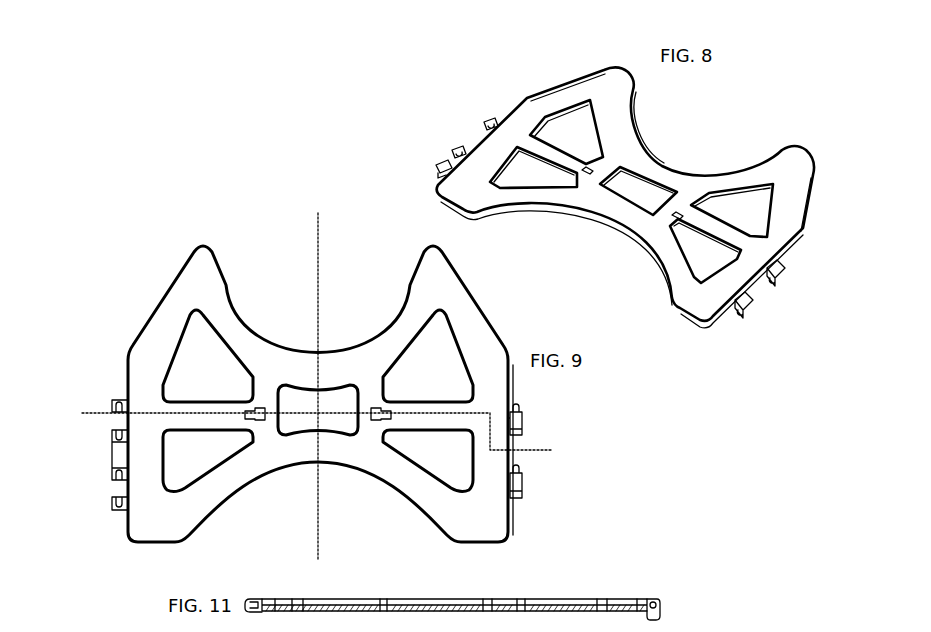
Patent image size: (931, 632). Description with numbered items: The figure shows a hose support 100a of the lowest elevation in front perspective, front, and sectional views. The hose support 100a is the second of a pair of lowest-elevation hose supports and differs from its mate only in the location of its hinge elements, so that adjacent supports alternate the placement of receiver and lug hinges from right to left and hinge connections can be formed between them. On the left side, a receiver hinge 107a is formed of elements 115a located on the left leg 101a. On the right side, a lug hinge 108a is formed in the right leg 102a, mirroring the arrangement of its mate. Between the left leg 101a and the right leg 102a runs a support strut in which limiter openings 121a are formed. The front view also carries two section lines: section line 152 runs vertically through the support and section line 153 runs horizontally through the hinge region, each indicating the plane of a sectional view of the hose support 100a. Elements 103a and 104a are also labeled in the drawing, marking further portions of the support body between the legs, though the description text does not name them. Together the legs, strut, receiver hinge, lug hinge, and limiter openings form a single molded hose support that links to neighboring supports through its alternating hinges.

In FIG. 8, the hose support 100a is at (425, 117).
In FIG. 9, the hose support 100a is at (320, 394).
In FIG. 11, the hose support 100a is at (454, 605).
In FIG. 8, the left leg 101a is at (523, 120).
In FIG. 9, the left leg 101a is at (148, 375).
In FIG. 8, the right leg 102a is at (775, 237).
In FIG. 9, the right leg 102a is at (490, 368).
In FIG. 8, the central portion 103a is at (637, 138).
In FIG. 9, the central portion 103a is at (318, 410).
In FIG. 8, the lower edge cutout 104a is at (607, 212).
In FIG. 9, the lower edge cutout 104a is at (345, 457).
In FIG. 9, the receiver hinge 107a is at (108, 478).
In FIG. 11, the receiver hinge 107a is at (248, 600).
In FIG. 8, the lug hinge 108a is at (778, 278).
In FIG. 9, the lug hinge 108a is at (525, 420).
In FIG. 11, the lug hinge 108a is at (652, 607).
In FIG. 8, the receiver hinge elements 115a is at (443, 163).
In FIG. 9, the receiver hinge elements 115a is at (115, 402).
In FIG. 8, the limiter openings 121a is at (632, 193).
In FIG. 9, the limiter openings 121a is at (258, 404).
In FIG. 9, the section line 152 is at (318, 213).
In FIG. 9, the section line 153 is at (82, 413).